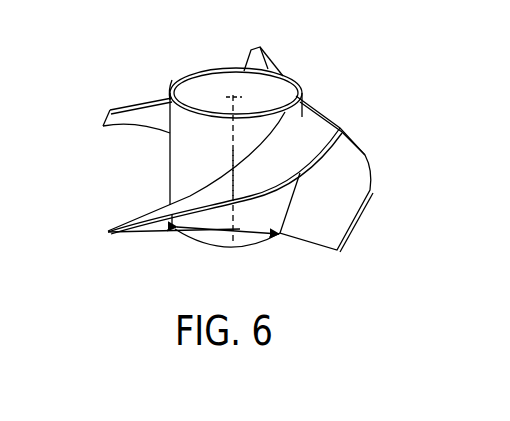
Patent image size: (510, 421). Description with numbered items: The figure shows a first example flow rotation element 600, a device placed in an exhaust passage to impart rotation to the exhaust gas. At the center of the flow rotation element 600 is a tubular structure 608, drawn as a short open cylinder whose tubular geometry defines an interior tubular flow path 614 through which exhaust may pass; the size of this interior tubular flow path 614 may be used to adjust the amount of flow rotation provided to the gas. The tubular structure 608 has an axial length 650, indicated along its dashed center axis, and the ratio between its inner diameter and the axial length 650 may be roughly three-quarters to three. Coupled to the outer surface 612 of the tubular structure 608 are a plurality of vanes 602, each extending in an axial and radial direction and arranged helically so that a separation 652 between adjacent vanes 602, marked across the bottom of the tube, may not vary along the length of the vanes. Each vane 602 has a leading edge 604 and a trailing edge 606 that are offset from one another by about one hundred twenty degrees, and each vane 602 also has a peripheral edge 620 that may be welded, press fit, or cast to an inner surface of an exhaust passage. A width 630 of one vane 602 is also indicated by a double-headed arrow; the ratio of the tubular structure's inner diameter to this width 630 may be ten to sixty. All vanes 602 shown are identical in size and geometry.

The flow rotation element 600 is at (360, 92).
The vane 602 is at (138, 120).
The leading edge 604 is at (148, 238).
The trailing edge 606 is at (140, 104).
The tubular structure 608 is at (180, 76).
The outer surface 612 is at (175, 136).
The interior tubular flow path 614 is at (265, 86).
The peripheral edge 620 is at (108, 113).
The width 630 is at (256, 161).
The axial length 650 is at (232, 172).
The separation 652 is at (246, 240).